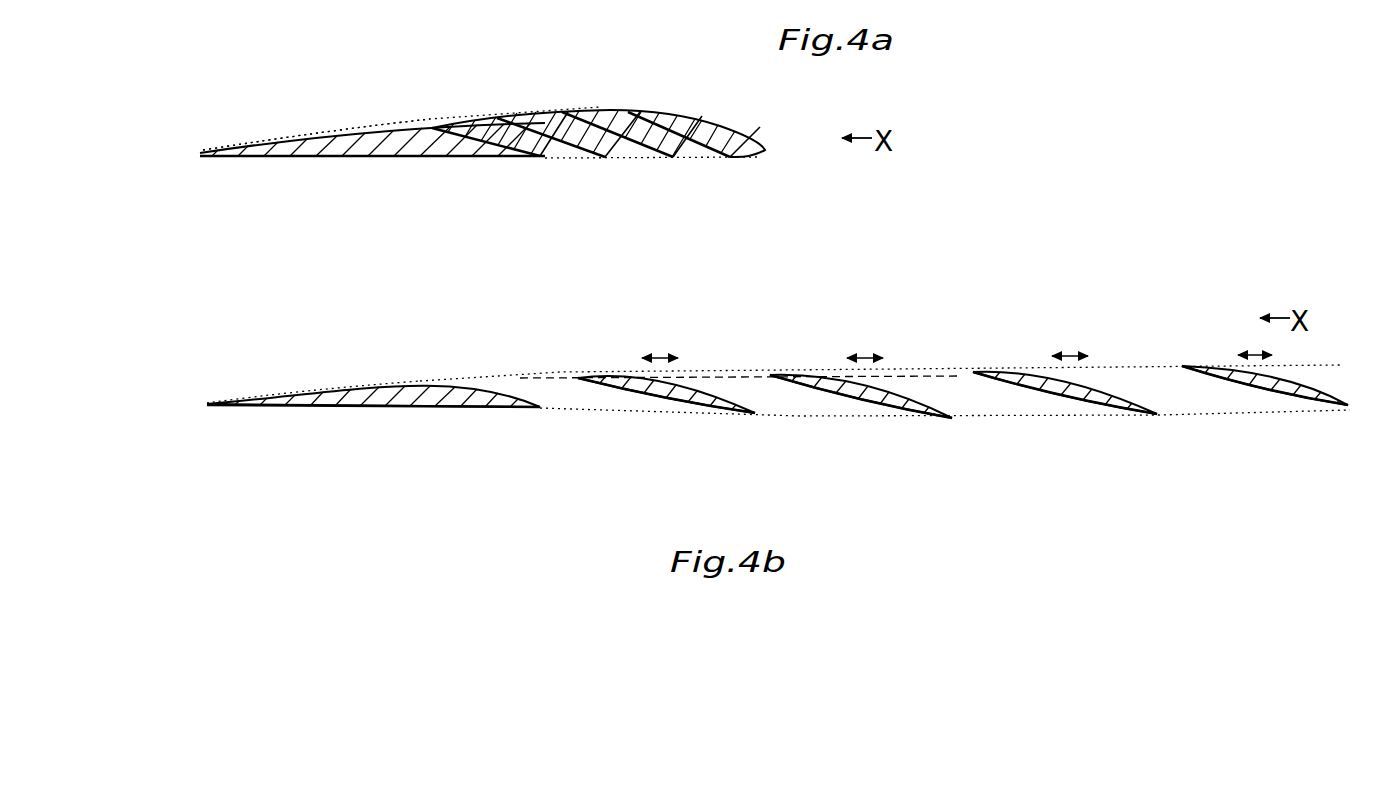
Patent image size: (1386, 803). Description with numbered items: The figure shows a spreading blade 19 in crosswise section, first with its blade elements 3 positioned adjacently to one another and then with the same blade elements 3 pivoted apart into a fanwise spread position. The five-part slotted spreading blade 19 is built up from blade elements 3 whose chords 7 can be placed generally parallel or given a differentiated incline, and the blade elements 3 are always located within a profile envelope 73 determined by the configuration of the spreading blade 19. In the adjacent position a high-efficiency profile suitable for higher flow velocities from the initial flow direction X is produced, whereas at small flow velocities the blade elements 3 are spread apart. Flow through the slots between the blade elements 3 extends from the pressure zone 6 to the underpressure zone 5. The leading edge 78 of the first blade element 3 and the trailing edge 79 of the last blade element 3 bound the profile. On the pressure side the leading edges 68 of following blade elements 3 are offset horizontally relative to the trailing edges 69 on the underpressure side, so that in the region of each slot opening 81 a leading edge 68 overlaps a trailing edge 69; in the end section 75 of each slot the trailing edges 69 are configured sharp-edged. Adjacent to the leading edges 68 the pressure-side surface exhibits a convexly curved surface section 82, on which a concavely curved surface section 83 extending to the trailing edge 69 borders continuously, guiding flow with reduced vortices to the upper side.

In FIG. 4A, the blade element 3 is at (312, 166).
In FIG. 4B, the blade element 3 is at (400, 410).
In FIG. 4A, the chord 7 is at (387, 166).
In FIG. 4A, the profile envelope 73 is at (326, 129).
In FIG. 4B, the profile envelope 73 is at (590, 370).
In FIG. 4A, the spreading blade 19 is at (454, 93).
In FIG. 4B, the spreading blade 19 is at (758, 334).
In FIG. 4A, the underpressure zone 5 is at (624, 48).
In FIG. 4B, the underpressure zone 5 is at (1044, 313).
In FIG. 4A, the pressure zone 6 is at (444, 211).
In FIG. 4B, the pressure zone 6 is at (978, 508).
In FIG. 4B, the trailing edge of last blade element 79 is at (207, 404).
In FIG. 4B, the end section of slot 75 is at (558, 384).
In FIG. 4B, the trailing edge 69 is at (975, 373).
In FIG. 4B, the leading edge of first blade element 78 is at (1348, 383).
In FIG. 4B, the slot opening 81 is at (600, 426).
In FIG. 4B, the concavely curved surface section 83 is at (838, 398).
In FIG. 4B, the leading edge 68 is at (1160, 425).
In FIG. 4B, the convexly curved surface section 82 is at (1315, 423).